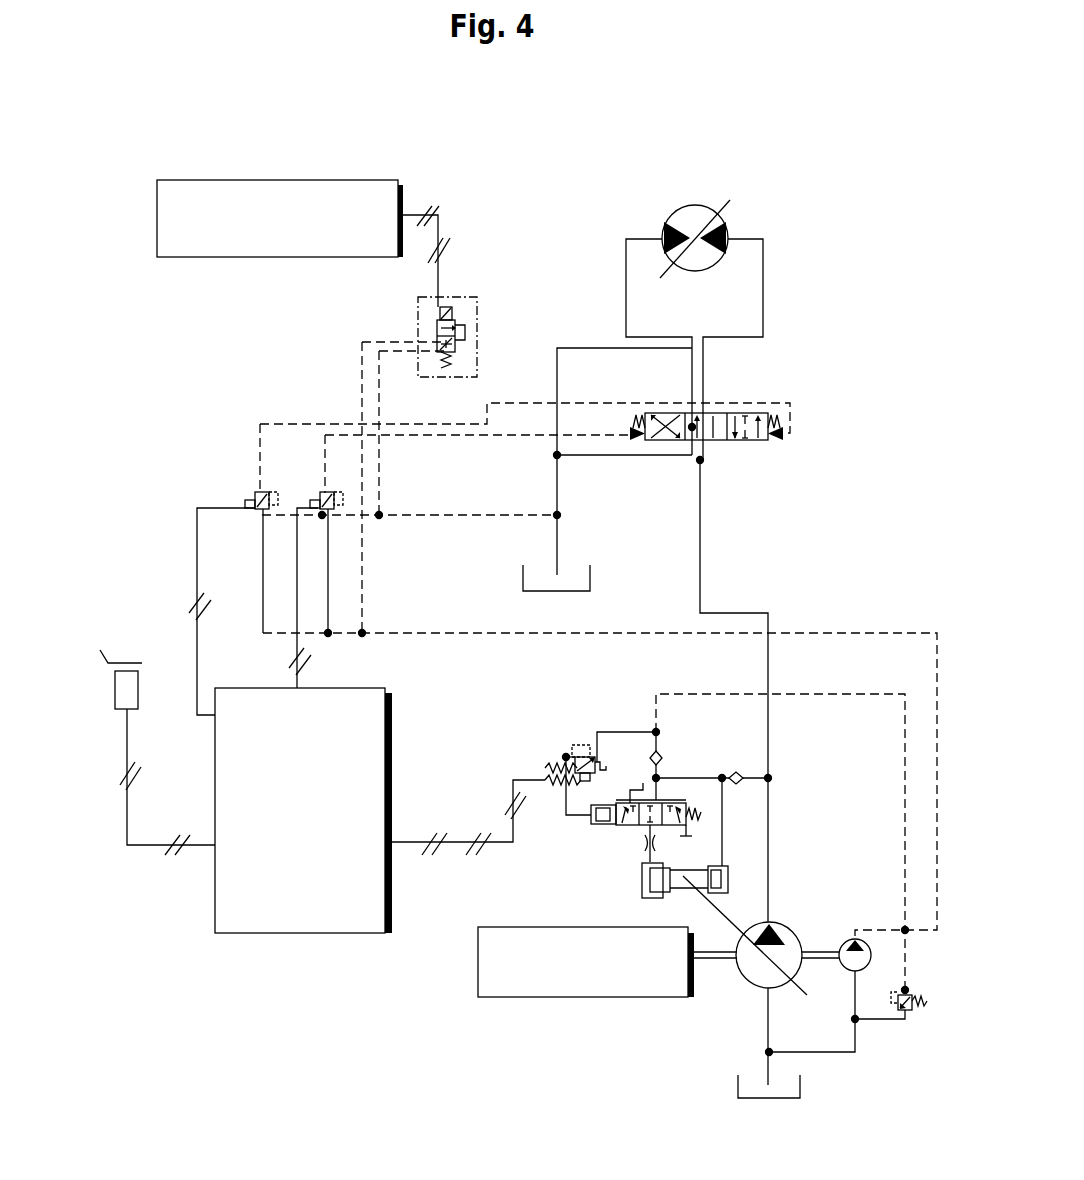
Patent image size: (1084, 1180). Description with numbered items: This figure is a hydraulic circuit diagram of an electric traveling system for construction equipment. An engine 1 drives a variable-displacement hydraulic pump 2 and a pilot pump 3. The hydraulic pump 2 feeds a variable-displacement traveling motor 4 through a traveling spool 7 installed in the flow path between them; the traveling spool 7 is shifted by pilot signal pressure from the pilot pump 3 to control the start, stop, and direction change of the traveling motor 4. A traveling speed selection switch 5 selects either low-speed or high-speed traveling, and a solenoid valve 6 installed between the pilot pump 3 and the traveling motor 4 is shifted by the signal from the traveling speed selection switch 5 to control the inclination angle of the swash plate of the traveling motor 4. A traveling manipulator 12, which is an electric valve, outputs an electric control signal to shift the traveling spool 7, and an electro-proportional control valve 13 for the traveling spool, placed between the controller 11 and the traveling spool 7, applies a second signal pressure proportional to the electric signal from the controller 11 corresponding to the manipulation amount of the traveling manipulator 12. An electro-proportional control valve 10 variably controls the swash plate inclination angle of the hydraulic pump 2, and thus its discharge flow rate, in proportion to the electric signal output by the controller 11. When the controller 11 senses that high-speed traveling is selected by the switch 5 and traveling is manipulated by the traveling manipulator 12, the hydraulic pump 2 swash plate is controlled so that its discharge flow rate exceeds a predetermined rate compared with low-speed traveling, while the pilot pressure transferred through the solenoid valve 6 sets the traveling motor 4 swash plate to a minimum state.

The engine 1 is at (618, 1000).
The variable-displacement hydraulic pump 2 is at (786, 922).
The pilot pump 3 is at (873, 955).
The variable-displacement traveling motor 4 is at (722, 220).
The traveling speed selection switch 5 is at (305, 180).
The solenoid valve 6 is at (477, 310).
The traveling spool 7 is at (758, 442).
The electro-proportional control valve 10 is at (562, 740).
The controller 11 is at (353, 940).
The traveling manipulator 12 is at (115, 688).
The electro-proportional control valve for the traveling spool 13 is at (322, 492).